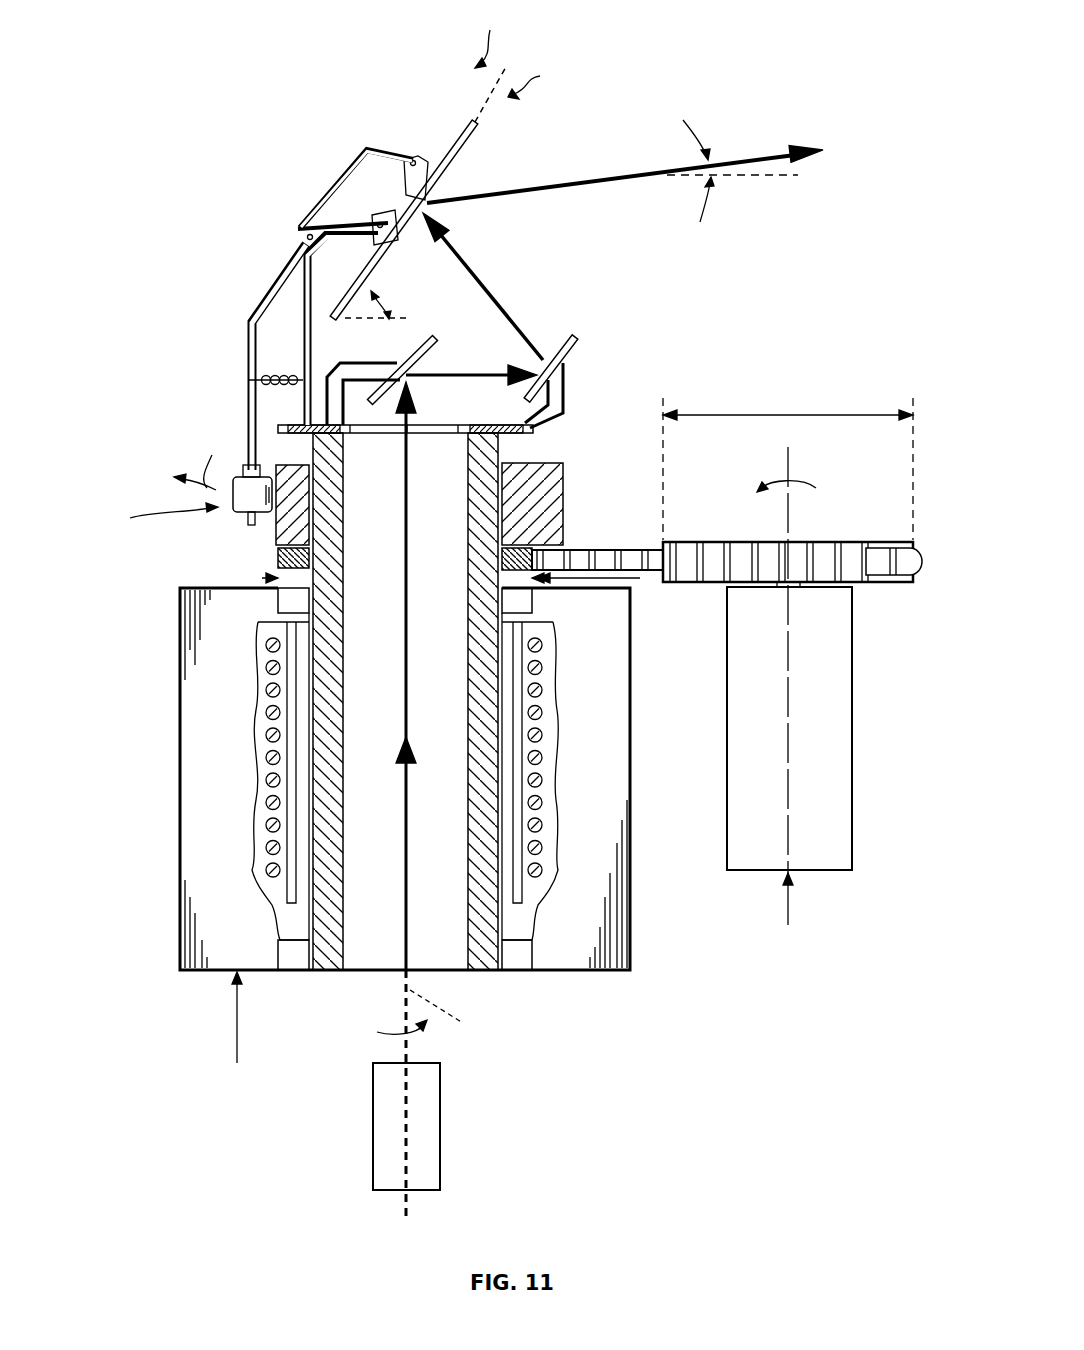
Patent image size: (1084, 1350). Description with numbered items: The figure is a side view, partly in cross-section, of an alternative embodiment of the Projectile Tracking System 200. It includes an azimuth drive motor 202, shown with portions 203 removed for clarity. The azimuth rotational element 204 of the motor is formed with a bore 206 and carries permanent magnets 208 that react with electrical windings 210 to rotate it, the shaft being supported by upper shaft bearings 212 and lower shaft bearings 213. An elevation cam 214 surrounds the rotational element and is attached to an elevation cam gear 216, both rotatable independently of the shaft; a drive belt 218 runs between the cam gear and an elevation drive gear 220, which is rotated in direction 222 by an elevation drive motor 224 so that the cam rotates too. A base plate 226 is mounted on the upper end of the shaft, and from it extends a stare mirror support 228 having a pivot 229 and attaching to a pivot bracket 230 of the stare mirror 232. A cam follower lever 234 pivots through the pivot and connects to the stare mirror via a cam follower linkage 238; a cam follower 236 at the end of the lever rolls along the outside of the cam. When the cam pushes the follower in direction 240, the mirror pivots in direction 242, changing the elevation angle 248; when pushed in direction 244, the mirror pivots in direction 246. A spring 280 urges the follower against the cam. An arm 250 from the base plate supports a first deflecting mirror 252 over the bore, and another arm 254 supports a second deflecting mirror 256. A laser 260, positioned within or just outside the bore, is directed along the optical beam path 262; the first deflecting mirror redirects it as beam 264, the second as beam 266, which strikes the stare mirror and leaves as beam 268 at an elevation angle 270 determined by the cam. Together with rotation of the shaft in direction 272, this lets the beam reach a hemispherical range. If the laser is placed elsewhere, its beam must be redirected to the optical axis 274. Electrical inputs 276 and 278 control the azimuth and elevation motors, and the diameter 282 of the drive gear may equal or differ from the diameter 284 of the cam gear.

The Projectile Tracking System 200 is at (882, 296).
The azimuth drive motor 202 is at (207, 765).
The portions 203 is at (265, 920).
The azimuth rotational element 204 is at (328, 962).
The bore 206 is at (445, 955).
The permanent magnets 208 is at (513, 770).
The electrical windings 210 is at (265, 671).
The upper shaft bearings 212 is at (292, 603).
The lower shaft bearings 213 is at (292, 962).
The elevation cam 214 is at (563, 472).
The elevation cam gear 216 is at (285, 560).
The drive belt 218 is at (625, 548).
The elevation drive gear 220 is at (840, 556).
The direction 222 is at (814, 468).
The elevation drive motor 224 is at (818, 650).
The base plate 226 is at (282, 425).
The stare mirror support 228 is at (300, 318).
The pivot 229 is at (304, 236).
The pivot bracket 230 is at (350, 172).
The stare mirror 232 is at (480, 132).
The cam follower lever 234 is at (248, 362).
The cam follower 236 is at (250, 497).
The cam follower linkage 238 is at (413, 158).
The direction 240 is at (200, 460).
The direction 242 is at (544, 79).
The direction 244 is at (152, 520).
The direction 246 is at (496, 37).
The elevation angle 248 is at (388, 296).
The arm 250 is at (330, 378).
The first deflecting mirror 252 is at (432, 343).
The arm 254 is at (563, 380).
The second deflecting mirror 256 is at (567, 337).
The laser 260 is at (440, 1130).
The optical beam path 262 is at (405, 852).
The beam 264 is at (452, 377).
The beam 266 is at (493, 296).
The beam 268 is at (608, 182).
The elevation angle 270 is at (713, 215).
The direction 272 is at (375, 1040).
The optical axis 274 is at (455, 1018).
The electrical input 276 is at (237, 1022).
The electrical input 278 is at (790, 925).
The spring 280 is at (262, 372).
The diameter 282 is at (790, 415).
The diameter 284 is at (640, 578).